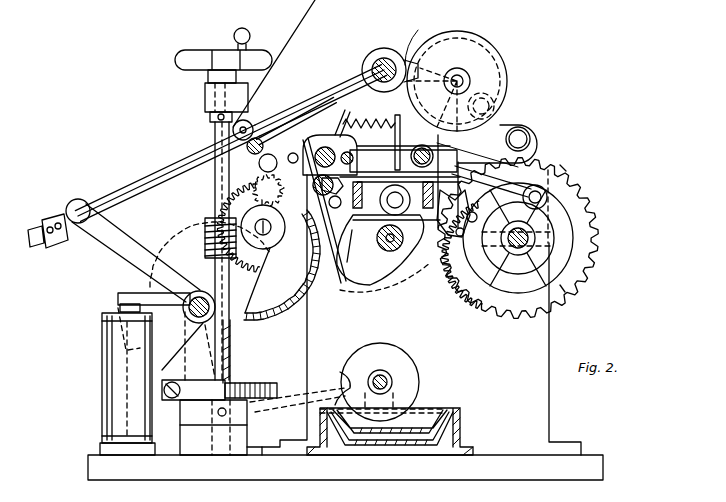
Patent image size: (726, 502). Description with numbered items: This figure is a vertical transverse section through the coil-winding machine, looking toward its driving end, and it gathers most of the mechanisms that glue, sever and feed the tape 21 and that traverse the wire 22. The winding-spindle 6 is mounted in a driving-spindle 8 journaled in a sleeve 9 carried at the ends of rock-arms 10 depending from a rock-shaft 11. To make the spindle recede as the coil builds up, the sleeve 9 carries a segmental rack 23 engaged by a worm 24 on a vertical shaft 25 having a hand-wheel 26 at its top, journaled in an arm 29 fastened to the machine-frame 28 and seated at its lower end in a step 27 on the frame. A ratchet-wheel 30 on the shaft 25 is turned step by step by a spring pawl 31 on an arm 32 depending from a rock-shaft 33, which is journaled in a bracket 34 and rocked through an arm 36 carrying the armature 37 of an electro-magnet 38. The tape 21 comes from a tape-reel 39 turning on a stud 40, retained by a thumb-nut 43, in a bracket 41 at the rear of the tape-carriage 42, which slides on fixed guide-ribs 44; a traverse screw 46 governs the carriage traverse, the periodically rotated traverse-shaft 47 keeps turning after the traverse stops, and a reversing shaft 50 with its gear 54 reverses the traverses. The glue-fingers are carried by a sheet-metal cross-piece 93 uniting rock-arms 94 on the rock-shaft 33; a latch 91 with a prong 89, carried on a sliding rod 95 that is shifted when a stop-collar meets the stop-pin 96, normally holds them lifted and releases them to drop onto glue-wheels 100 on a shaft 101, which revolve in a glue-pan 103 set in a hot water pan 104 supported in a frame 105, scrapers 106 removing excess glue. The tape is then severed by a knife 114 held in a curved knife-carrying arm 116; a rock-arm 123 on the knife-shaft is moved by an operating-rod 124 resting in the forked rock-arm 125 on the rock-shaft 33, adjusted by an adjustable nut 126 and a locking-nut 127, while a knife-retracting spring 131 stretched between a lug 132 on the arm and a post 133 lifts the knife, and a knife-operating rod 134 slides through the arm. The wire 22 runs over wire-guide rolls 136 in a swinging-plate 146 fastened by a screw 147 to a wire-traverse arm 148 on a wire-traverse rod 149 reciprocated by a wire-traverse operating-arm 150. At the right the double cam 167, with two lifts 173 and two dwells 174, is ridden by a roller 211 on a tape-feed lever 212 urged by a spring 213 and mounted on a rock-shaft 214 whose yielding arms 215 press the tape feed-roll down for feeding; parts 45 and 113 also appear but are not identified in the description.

The winding-spindle 6 is at (258, 246).
The driving-spindle 8 is at (205, 224).
The sleeve 9 is at (257, 280).
The rock-arms 10 is at (368, 286).
The rock-shaft 11 is at (393, 252).
The tape 21 is at (470, 143).
The wire 22 is at (305, 18).
The segmental rack 23 is at (214, 205).
The worm 24 is at (210, 254).
The shaft 25 is at (231, 345).
The hand-wheel 26 is at (193, 54).
The step 27 is at (243, 430).
The base or frame 28 is at (345, 467).
The arm 29 is at (205, 100).
The ratchet-wheel 30 is at (262, 383).
The spring pawl 31 is at (197, 399).
The arm 32 is at (183, 372).
The rock-shaft 33 is at (185, 297).
The bracket 34 is at (190, 428).
The arm 36 is at (188, 312).
The armature 37 is at (117, 300).
The electro-magnet 38 is at (102, 388).
The tape-reel 39 is at (500, 70).
The stud 40 is at (463, 77).
The bracket 41 is at (446, 97).
The tape-carriage 42 is at (445, 290).
The thumb-nut 43 is at (455, 75).
The guide-ribs 44 is at (413, 222).
The gear 45 is at (448, 254).
The traverse screw 46 is at (386, 200).
The traverse-shaft 47 is at (387, 245).
The reversing shaft 50 is at (518, 255).
The gear 54 is at (592, 243).
The prong 89 is at (268, 190).
The latch 91 is at (333, 256).
The sheet-metal cross-piece 93 is at (322, 288).
The rock-arms 94 is at (258, 318).
The longitudinally movable rod 95 is at (320, 192).
The stop-pin 96 is at (272, 245).
The glue-wheels 100 is at (390, 353).
The shaft 101 is at (393, 382).
The glue-pan 103 is at (440, 410).
The hot water pan 104 is at (408, 448).
The frame 105 is at (461, 440).
The scrapers 106 is at (345, 380).
The link 113 is at (350, 255).
The knife 114 is at (270, 154).
The curved knife-carrying arm 116 is at (306, 124).
The rock-arm 123 is at (352, 132).
The operating-rod 124 is at (140, 194).
The rock-arm 125 is at (110, 246).
The adjustable nut 126 is at (72, 212).
The locking-nut 127 is at (45, 228).
The knife-retracting spring 131 is at (388, 118).
The lug 132 is at (325, 146).
The post 133 is at (401, 126).
The knife-operating rod 134 is at (362, 120).
The wire-guide rolls 136 is at (233, 130).
The swinging-plate 146 is at (222, 130).
The screw 147 is at (258, 138).
The wire-traverse arm 148 is at (318, 92).
The wire-traverse rod 149 is at (390, 56).
The wire-traverse operating-arm 150 is at (420, 37).
The cam 167 is at (565, 292).
The lifts 173 is at (526, 311).
The dwells 174 is at (486, 305).
The roller 211 is at (562, 167).
The tape-feed lever 212 is at (520, 166).
The spring 213 is at (522, 192).
The rock-shaft 214 is at (420, 150).
The arms 215 is at (374, 148).